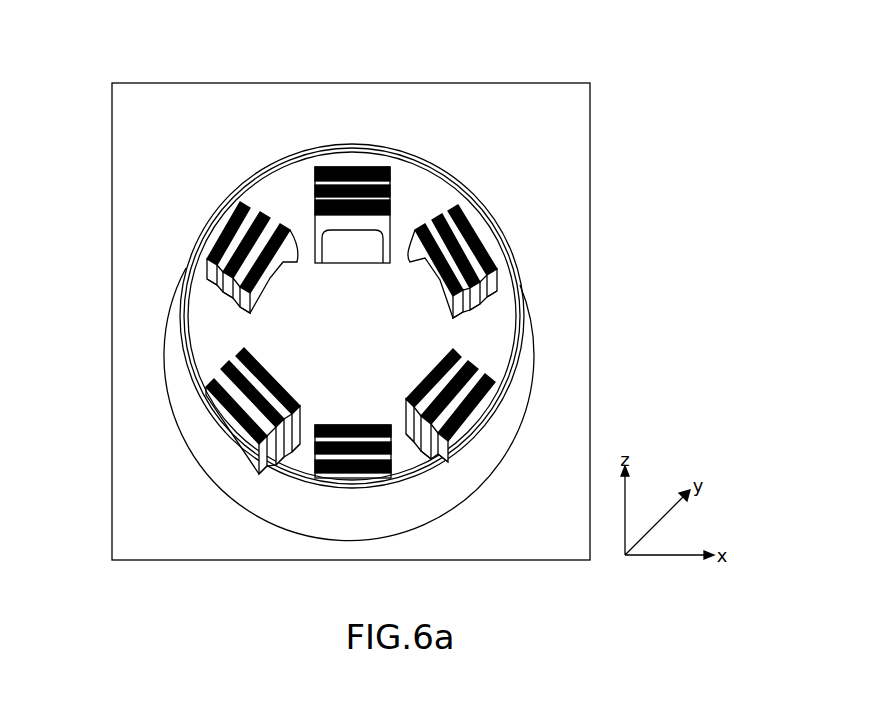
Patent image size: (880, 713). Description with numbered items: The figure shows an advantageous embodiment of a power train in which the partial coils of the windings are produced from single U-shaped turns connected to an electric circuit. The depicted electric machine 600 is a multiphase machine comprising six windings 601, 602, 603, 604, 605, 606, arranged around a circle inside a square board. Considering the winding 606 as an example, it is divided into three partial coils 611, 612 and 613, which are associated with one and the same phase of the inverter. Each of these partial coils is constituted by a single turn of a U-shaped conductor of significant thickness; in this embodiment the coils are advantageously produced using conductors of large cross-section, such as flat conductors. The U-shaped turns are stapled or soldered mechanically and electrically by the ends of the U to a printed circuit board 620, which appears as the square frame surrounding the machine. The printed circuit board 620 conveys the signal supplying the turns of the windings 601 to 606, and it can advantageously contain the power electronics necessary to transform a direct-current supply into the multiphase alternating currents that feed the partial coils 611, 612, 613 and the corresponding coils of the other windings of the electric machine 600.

The electric machine 600 is at (531, 66).
The winding 601 is at (350, 167).
The winding 602 is at (480, 238).
The winding 603 is at (471, 427).
The winding 604 is at (355, 482).
The winding 605 is at (227, 428).
The winding 606 is at (177, 268).
The partial coil 611 is at (210, 282).
The partial coil 612 is at (226, 296).
The partial coil 613 is at (242, 310).
The printed circuit board 620 is at (112, 112).